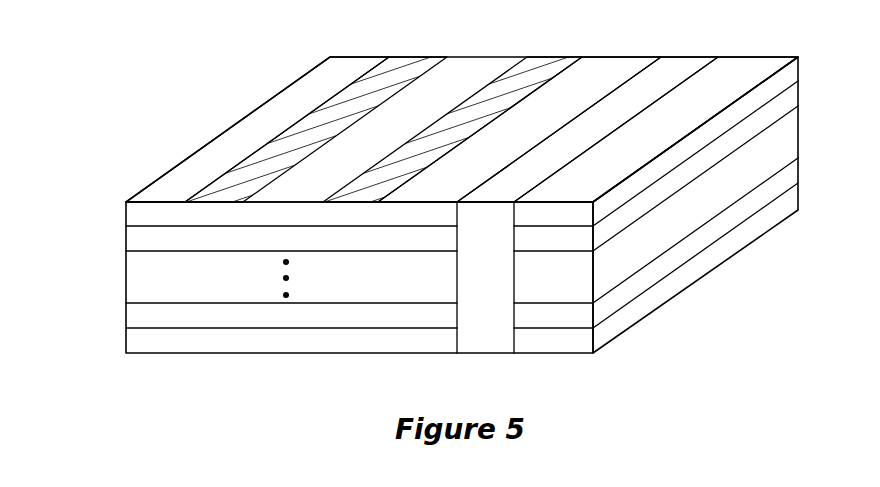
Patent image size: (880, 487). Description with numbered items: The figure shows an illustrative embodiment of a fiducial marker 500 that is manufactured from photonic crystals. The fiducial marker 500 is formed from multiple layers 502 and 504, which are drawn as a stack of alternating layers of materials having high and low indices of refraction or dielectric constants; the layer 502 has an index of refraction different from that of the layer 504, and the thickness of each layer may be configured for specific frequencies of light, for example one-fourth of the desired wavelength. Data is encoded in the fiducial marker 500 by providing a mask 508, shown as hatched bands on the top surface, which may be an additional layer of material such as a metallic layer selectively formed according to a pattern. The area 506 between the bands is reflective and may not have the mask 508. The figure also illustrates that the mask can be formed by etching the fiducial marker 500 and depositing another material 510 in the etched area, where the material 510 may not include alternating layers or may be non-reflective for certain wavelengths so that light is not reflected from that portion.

The fiducial marker 500 is at (123, 153).
The layer 502 is at (131, 217).
The layer 504 is at (131, 243).
The area 506 is at (340, 57).
The mask 508 is at (405, 57).
The material 510 is at (683, 57).